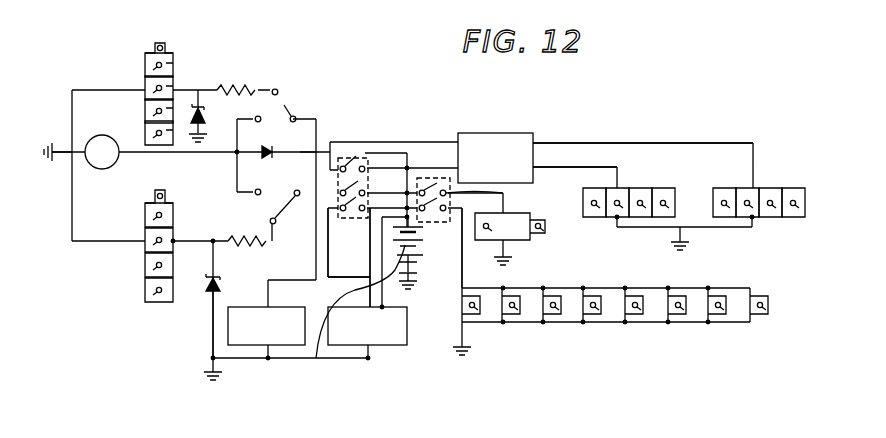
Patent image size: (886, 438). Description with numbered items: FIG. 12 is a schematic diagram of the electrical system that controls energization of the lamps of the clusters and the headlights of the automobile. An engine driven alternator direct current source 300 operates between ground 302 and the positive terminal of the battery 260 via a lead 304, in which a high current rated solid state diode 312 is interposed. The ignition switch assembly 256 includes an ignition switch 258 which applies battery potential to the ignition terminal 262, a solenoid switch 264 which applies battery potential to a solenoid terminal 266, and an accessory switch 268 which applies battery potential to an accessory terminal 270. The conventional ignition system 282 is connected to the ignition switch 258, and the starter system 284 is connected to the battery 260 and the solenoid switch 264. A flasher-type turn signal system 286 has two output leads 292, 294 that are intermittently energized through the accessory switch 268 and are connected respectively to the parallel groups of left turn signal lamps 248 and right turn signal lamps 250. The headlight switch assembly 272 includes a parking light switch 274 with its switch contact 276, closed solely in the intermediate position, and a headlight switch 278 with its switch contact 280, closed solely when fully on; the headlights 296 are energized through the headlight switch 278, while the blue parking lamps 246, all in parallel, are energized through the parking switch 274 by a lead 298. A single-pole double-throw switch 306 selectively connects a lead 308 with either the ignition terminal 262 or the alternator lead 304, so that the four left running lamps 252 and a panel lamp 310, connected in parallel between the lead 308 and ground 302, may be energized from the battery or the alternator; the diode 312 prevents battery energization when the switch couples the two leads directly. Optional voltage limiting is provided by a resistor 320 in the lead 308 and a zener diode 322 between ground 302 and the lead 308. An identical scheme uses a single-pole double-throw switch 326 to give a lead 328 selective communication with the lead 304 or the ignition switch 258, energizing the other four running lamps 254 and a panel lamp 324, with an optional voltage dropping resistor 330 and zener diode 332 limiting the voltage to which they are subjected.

The parking lamps 246 is at (480, 322).
The left turn signal lamps 248 is at (796, 193).
The right turn signal lamps 250 is at (668, 190).
The running lamps 252 is at (150, 290).
The running lamps 254 is at (170, 133).
The ignition switch assembly 256 is at (375, 158).
The ignition switch 258 is at (360, 181).
The battery 260 is at (317, 360).
The ignition terminal 262 is at (340, 195).
The solenoid switch 264 is at (370, 250).
The solenoid terminal 266 is at (348, 213).
The accessory switch 268 is at (358, 156).
The accessory terminal 270 is at (344, 165).
The headlight switch assembly 272 is at (468, 135).
The parking light switch 274 is at (422, 240).
The switch contact 276 is at (418, 262).
The headlight switch 278 is at (437, 183).
The switch contact 280 is at (512, 194).
The ignition system 282 is at (288, 359).
The starter system 284 is at (392, 350).
The turn signal system 286 is at (532, 134).
The output lead 292 is at (647, 143).
The output lead 294 is at (577, 167).
The headlights 296 is at (531, 240).
The lead 298 is at (460, 284).
The alternator direct current source 300 is at (106, 134).
The ground 302 is at (64, 154).
The lead 304 is at (300, 151).
The single-pole double-throw switch 306 is at (265, 210).
The lead 308 is at (193, 240).
The panel lamp 310 is at (166, 195).
The solid state diode 312 is at (268, 158).
The resistor 320 is at (226, 252).
The zener diode 322 is at (210, 297).
The panel lamp 324 is at (163, 45).
The single-pole double-throw switch 326 is at (285, 105).
The lead 328 is at (208, 95).
The voltage dropping resistor 330 is at (254, 86).
The zener diode 332 is at (207, 138).